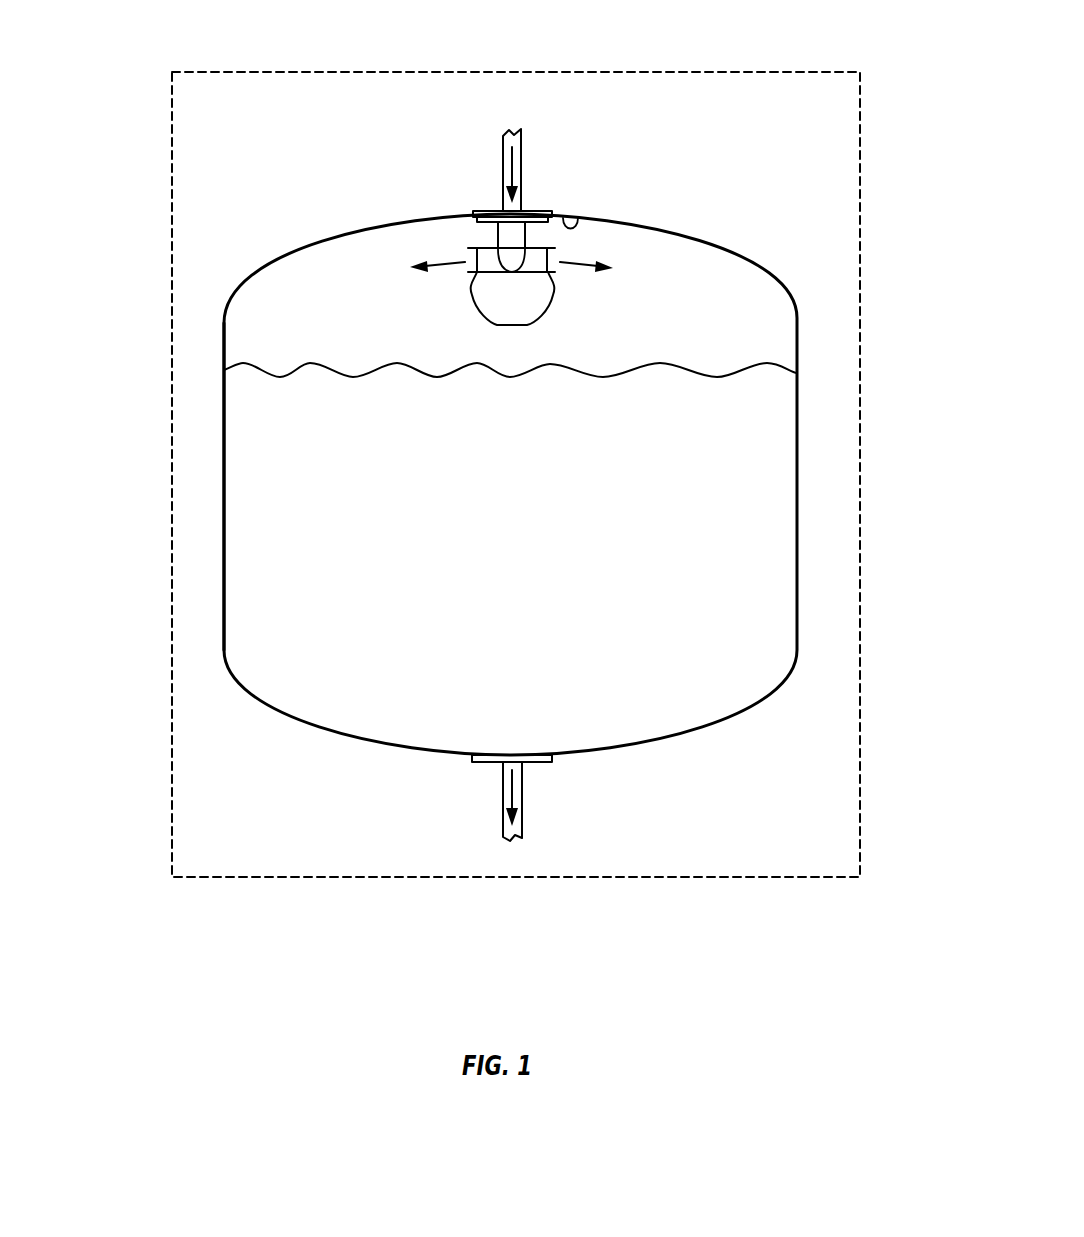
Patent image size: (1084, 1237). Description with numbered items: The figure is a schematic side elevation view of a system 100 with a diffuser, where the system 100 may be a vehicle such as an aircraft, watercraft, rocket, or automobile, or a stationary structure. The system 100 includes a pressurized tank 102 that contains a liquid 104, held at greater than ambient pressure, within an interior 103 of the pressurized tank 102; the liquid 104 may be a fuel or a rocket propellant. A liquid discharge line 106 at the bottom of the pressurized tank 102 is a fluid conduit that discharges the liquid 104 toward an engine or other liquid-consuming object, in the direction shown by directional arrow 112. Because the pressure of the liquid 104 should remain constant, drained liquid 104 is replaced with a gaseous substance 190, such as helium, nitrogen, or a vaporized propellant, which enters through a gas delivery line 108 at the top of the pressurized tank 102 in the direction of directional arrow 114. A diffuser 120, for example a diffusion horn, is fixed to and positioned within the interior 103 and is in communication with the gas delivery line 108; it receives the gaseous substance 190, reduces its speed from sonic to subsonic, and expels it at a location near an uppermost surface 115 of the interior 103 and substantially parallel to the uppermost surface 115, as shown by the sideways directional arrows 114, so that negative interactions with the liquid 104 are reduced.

The system 100 is at (729, 62).
The pressurized tank 102 is at (714, 250).
The interior 103 is at (233, 457).
The liquid 104 is at (534, 558).
The liquid discharge line 106 is at (522, 808).
The gas delivery line 108 is at (521, 157).
The directional arrow 112 is at (516, 777).
The directional arrows 114 is at (509, 163).
The uppermost surface 115 is at (583, 230).
The diffuser 120 is at (467, 317).
The gaseous substance 190 is at (712, 324).